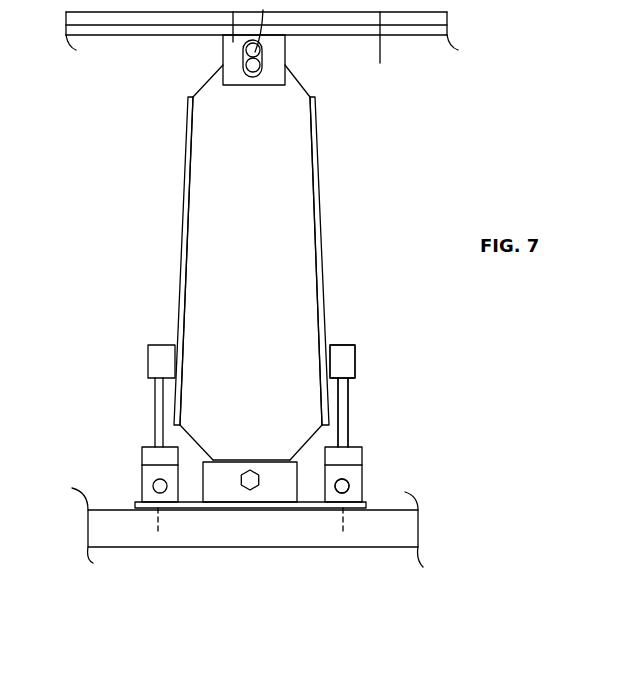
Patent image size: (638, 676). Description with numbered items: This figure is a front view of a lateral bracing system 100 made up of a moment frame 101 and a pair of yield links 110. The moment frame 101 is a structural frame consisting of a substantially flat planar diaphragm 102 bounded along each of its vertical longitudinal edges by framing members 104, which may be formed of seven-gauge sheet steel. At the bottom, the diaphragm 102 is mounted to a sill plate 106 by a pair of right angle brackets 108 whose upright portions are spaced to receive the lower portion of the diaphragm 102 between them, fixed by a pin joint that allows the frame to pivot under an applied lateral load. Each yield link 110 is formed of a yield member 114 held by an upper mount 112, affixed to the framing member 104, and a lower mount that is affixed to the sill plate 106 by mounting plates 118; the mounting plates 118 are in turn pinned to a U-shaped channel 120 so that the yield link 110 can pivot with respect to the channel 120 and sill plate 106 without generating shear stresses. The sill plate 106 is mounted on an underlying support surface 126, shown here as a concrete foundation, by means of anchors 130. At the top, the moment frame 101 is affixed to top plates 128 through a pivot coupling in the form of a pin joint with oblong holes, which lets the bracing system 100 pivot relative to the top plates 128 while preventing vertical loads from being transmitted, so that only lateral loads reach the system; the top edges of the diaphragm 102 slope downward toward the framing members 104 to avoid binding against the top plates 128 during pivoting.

The lateral bracing system 100 is at (118, 253).
The moment frame 101 is at (357, 187).
The diaphragm 102 is at (254, 76).
The framing members 104 is at (330, 225).
The sill plate 106 is at (297, 510).
The right angle brackets 108 is at (225, 492).
The yield links 110 is at (117, 413).
The upper mount 112 is at (352, 358).
The yield member 114 is at (350, 395).
The mounting plates 118 is at (362, 453).
The U-shaped channel 120 is at (355, 477).
The underlying support surface 126 is at (105, 538).
The top plates 128 is at (362, 35).
The anchors 130 is at (348, 528).